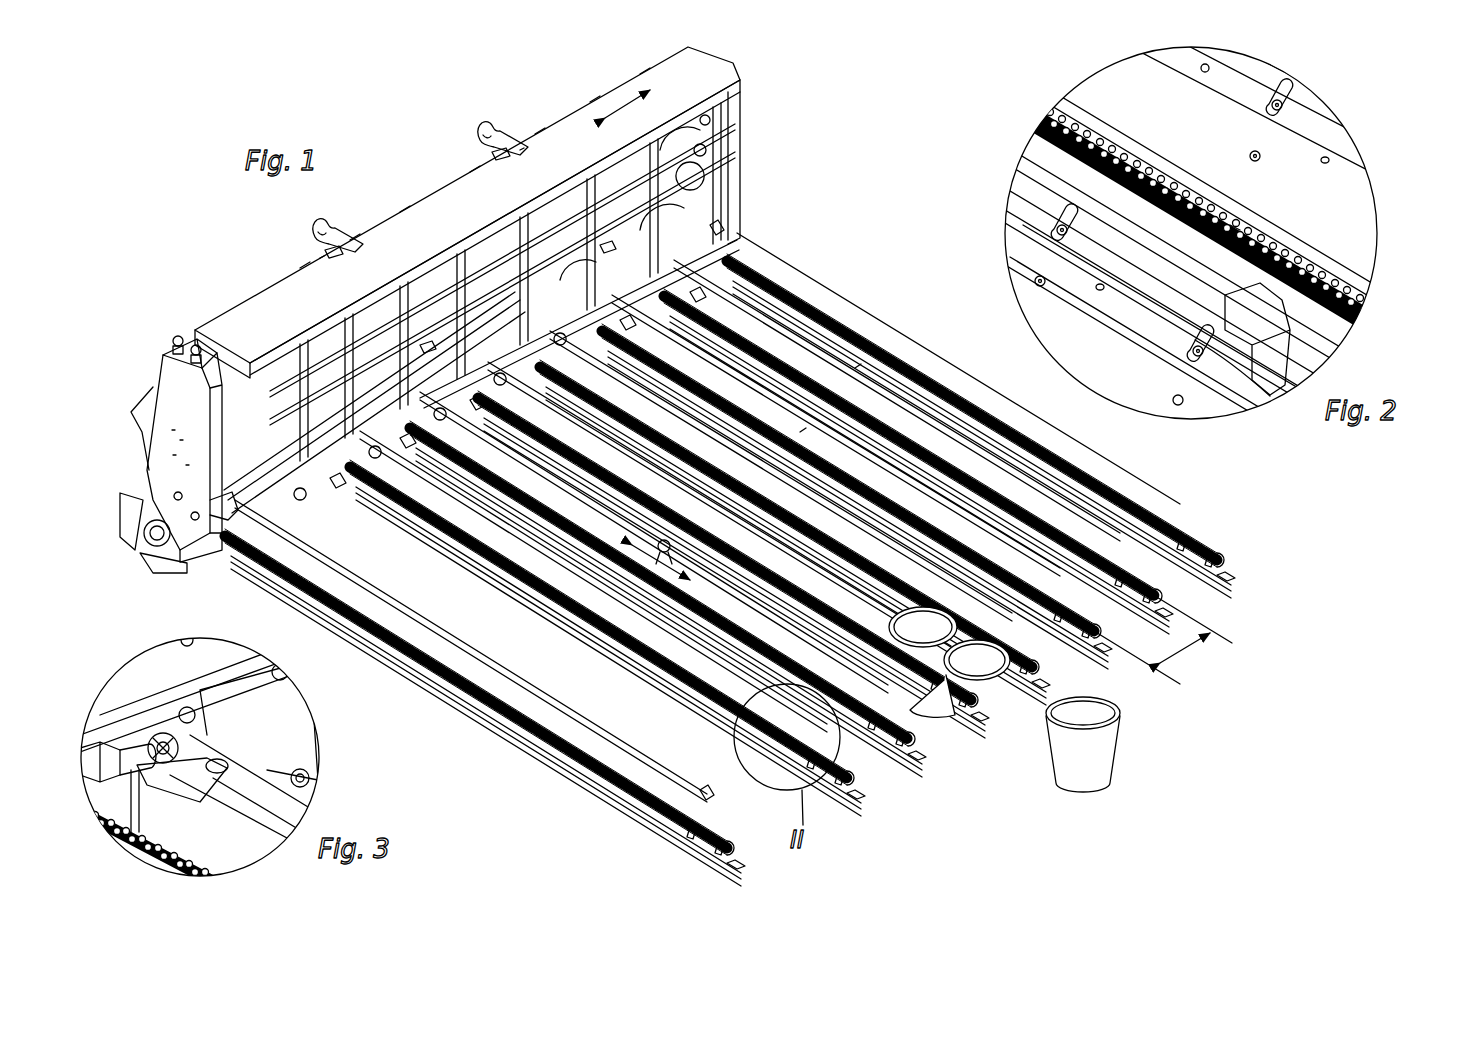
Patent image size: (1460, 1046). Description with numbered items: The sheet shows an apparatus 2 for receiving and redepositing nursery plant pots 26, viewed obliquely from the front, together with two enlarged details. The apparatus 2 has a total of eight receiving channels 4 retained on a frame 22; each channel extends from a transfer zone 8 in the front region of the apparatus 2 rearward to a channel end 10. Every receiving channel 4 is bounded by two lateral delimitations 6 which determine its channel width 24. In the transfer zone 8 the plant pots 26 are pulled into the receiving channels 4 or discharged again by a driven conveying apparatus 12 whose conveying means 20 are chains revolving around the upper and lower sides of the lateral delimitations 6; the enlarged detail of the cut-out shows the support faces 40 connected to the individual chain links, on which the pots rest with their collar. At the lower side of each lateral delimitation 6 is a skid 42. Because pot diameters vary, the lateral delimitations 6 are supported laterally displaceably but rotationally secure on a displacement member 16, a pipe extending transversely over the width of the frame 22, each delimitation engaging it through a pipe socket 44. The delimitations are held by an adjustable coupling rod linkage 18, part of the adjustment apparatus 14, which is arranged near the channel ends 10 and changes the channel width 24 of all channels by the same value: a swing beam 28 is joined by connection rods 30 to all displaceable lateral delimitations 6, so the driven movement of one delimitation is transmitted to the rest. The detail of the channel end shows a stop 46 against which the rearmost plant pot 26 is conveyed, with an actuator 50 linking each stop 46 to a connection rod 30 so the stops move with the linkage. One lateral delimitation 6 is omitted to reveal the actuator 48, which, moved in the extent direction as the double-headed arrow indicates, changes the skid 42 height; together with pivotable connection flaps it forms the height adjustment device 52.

In FIG. 1, the apparatus 2 is at (805, 170).
In FIG. 1, the receiving channel 4 is at (736, 578).
In FIG. 1, the lateral delimitation 6 is at (504, 712).
In FIG. 2, the lateral delimitation 6 is at (1200, 251).
In FIG. 1, the transfer zone 8 is at (1050, 655).
In FIG. 1, the channel end 10 is at (630, 318).
In FIG. 3, the channel end 10 is at (250, 815).
In FIG. 1, the conveying apparatus 12 is at (863, 815).
In FIG. 1, the adjustment apparatus 14 is at (492, 318).
In FIG. 1, the displacement member 16 is at (640, 212).
In FIG. 1, the coupling rod linkage 18 is at (715, 218).
In FIG. 1, the conveying means 20 is at (800, 432).
In FIG. 2, the conveying means 20 is at (1197, 237).
In FIG. 1, the frame 22 is at (288, 285).
In FIG. 1, the channel width 24 is at (1196, 650).
In FIG. 1, the plant pot 26 is at (935, 640).
In FIG. 1, the swing beam 28 is at (350, 400).
In FIG. 1, the connection rod 30 is at (545, 310).
In FIG. 2, the support face 40 is at (1202, 188).
In FIG. 1, the skid 42 is at (690, 777).
In FIG. 2, the skid 42 is at (1126, 344).
In FIG. 1, the pipe socket 44 is at (695, 215).
In FIG. 3, the stop 46 is at (233, 748).
In FIG. 1, the actuator 48 is at (482, 655).
In FIG. 3, the actuator 50 is at (123, 755).
In FIG. 1, the height adjustment device 52 is at (700, 767).